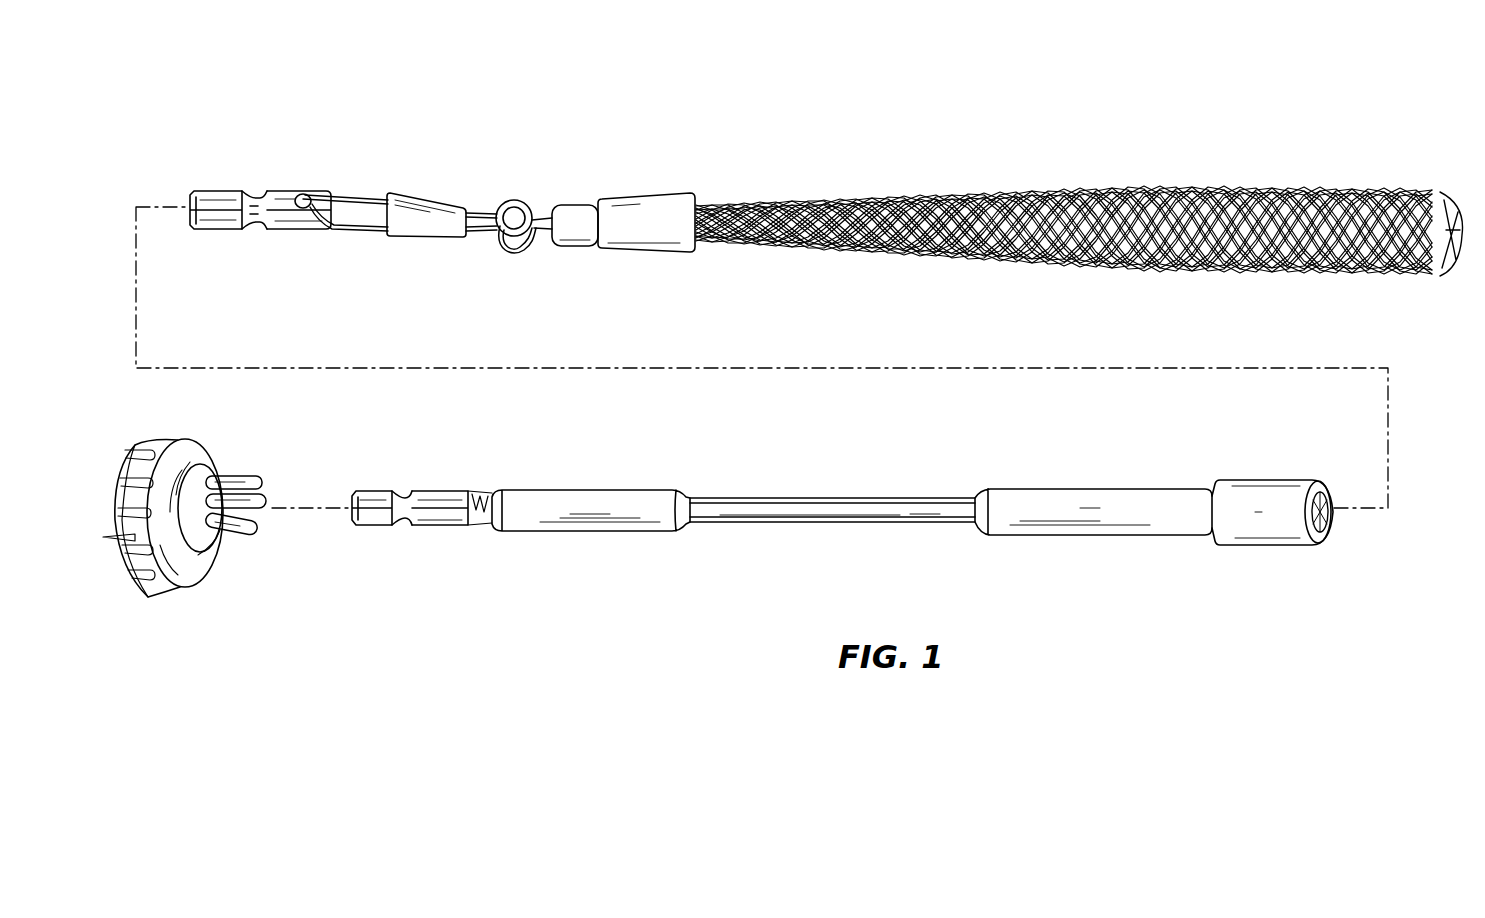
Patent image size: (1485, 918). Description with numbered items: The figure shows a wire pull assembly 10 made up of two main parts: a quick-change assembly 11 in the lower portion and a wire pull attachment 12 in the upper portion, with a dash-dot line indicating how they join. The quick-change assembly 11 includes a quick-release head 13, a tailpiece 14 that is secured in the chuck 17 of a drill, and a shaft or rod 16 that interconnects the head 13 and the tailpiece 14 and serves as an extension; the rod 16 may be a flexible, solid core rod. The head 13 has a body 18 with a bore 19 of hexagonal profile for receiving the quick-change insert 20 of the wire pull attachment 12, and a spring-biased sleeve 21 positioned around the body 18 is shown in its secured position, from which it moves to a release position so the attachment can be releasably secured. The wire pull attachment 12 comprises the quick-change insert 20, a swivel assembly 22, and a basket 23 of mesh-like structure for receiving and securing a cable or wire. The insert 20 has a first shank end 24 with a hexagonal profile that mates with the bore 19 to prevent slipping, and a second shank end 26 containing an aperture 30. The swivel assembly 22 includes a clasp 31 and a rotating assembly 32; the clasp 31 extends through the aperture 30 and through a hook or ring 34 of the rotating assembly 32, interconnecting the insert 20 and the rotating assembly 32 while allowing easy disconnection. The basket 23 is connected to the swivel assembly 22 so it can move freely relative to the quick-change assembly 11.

The wire pull assembly 10 is at (470, 62).
The quick-change assembly 11 is at (1082, 583).
The wire pull attachment 12 is at (830, 172).
The quick-release head 13 is at (1192, 483).
The tailpiece 14 is at (582, 490).
The shaft or rod 16 is at (794, 497).
The chuck 17 is at (200, 563).
The body 18 is at (1022, 497).
The bore 19 is at (1325, 499).
The quick-change insert 20 is at (254, 180).
The spring-biased sleeve 21 is at (1262, 487).
The swivel assembly 22 is at (459, 197).
The basket 23 is at (1157, 192).
The first shank end 24 is at (192, 192).
The second shank end 26 is at (279, 193).
The aperture 30 is at (310, 212).
The clasp 31 is at (348, 192).
The rotating assembly 32 is at (576, 212).
The hook or ring 34 is at (514, 250).